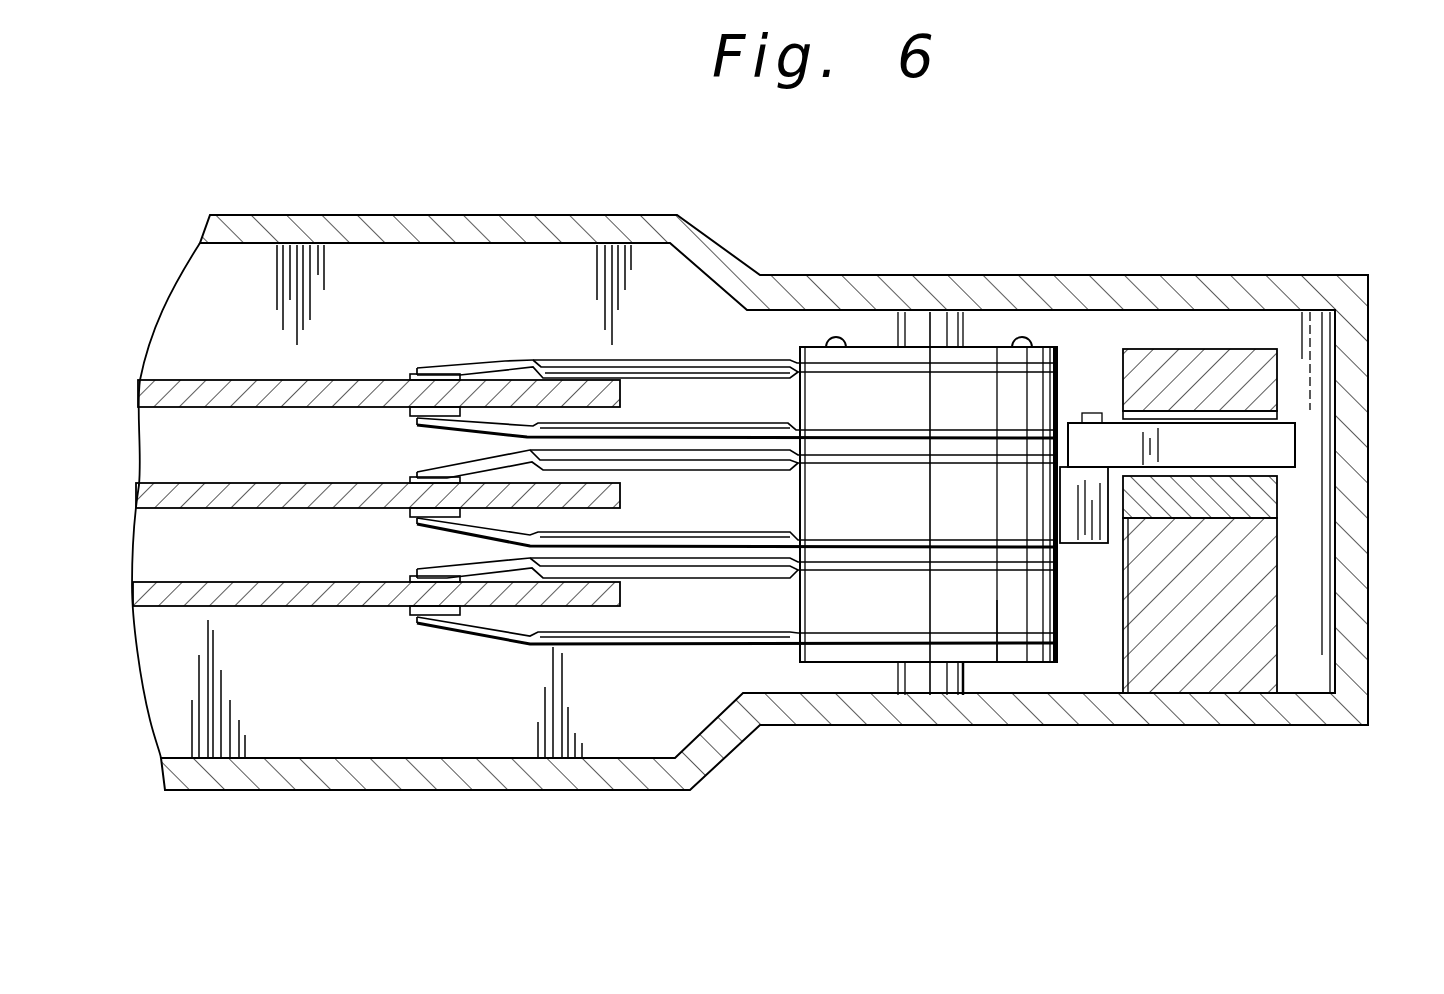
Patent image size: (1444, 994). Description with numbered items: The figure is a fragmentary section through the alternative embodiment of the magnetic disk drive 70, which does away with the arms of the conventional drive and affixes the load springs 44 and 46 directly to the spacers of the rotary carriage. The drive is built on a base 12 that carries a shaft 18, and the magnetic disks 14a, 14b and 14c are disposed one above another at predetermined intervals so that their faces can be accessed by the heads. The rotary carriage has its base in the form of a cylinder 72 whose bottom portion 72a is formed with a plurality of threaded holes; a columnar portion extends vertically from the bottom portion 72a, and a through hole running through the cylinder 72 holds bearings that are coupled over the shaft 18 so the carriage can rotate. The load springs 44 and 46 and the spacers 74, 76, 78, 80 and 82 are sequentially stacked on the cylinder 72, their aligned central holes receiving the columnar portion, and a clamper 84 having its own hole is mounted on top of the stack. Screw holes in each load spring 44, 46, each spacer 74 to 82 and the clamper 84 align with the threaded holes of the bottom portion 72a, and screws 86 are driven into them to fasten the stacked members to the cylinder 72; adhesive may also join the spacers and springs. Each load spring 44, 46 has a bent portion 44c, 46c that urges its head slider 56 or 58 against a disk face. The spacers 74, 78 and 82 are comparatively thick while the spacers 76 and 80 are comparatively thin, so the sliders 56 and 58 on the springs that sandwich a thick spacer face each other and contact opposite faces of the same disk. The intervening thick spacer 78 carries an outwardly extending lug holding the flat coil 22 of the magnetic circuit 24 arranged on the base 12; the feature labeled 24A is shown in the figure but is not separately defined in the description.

The base 12 is at (1372, 688).
The magnetic disk 14a is at (212, 381).
The magnetic disk 14b is at (213, 485).
The magnetic disk 14c is at (213, 582).
The shaft 18 is at (940, 330).
The flat coil 22 is at (1290, 445).
The magnetic circuit 24 is at (1262, 340).
The opening 24A is at (873, 315).
The load spring 44 is at (735, 455).
The bent portion 44c is at (490, 362).
The load spring 46 is at (735, 538).
The bent portion 46c is at (534, 645).
The head slider 56 is at (410, 372).
The head slider 58 is at (408, 414).
The magnetic disk drive 70 is at (1094, 427).
The cylinder 72 is at (1025, 487).
The bottom portion 72a is at (1012, 653).
The spacer 74 is at (1030, 405).
The spacer 76 is at (1037, 448).
The spacer 78 is at (1033, 510).
The spacer 80 is at (1037, 558).
The spacer 82 is at (1032, 615).
The clamper 84 is at (1058, 355).
The screws 86 is at (838, 330).